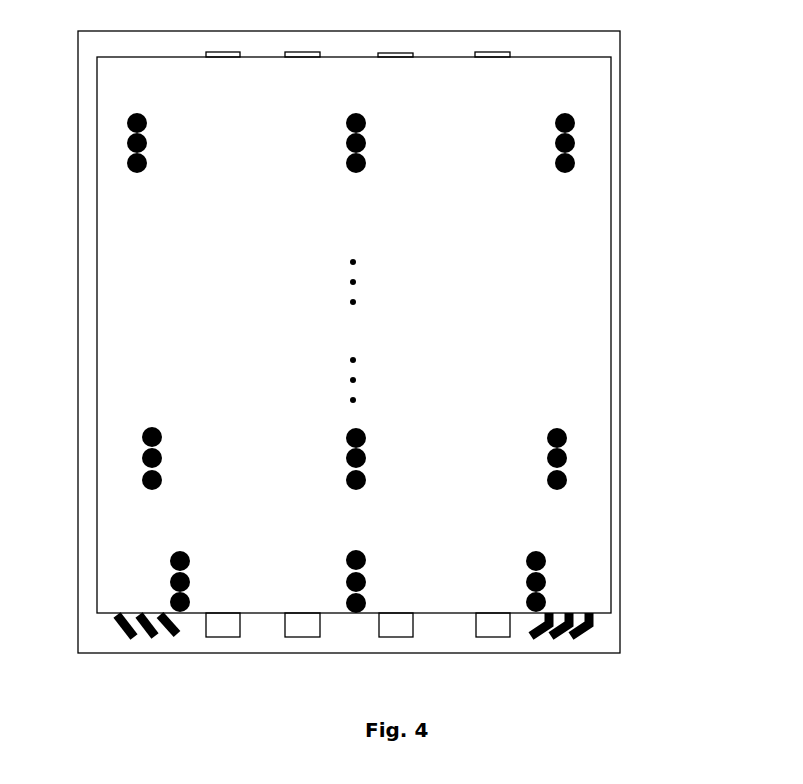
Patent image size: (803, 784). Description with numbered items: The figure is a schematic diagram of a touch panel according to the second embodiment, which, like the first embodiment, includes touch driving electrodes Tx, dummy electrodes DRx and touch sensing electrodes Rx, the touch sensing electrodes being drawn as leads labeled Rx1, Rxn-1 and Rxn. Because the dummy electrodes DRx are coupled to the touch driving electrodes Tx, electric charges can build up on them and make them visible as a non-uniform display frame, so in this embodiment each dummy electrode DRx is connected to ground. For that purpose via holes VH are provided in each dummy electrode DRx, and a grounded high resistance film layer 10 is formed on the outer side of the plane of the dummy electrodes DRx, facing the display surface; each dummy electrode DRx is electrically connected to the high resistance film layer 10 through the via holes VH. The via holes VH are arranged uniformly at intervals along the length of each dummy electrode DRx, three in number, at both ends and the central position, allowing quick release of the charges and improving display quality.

The high resistance film layer 10 is at (611, 483).
The touch sensing electrodes Rx is at (611, 123).
The dummy electrodes DRx is at (611, 190).
The via holes VH is at (557, 438).
The touch driving electrodes Tx is at (396, 637).
The first receiving electrode lead Rx1 is at (532, 637).
The (n-1)th receiving electrode lead Rxn-1 is at (560, 637).
The nth receiving electrode lead Rxn is at (587, 635).